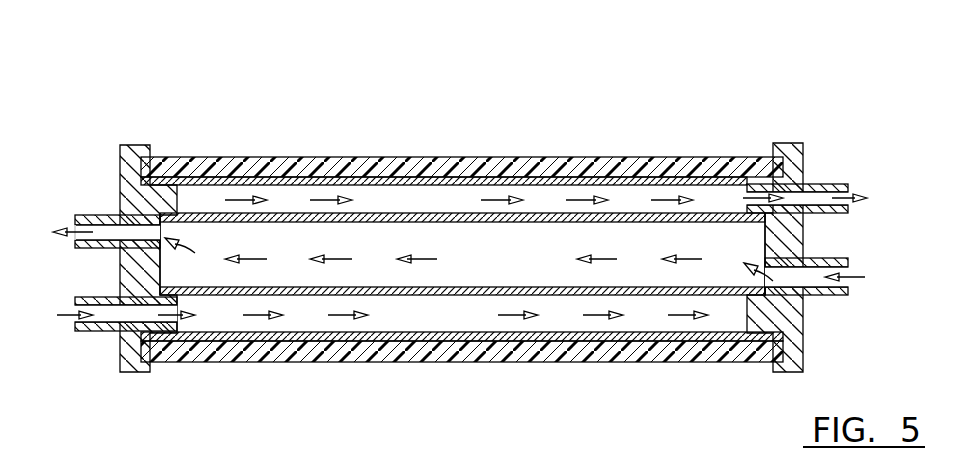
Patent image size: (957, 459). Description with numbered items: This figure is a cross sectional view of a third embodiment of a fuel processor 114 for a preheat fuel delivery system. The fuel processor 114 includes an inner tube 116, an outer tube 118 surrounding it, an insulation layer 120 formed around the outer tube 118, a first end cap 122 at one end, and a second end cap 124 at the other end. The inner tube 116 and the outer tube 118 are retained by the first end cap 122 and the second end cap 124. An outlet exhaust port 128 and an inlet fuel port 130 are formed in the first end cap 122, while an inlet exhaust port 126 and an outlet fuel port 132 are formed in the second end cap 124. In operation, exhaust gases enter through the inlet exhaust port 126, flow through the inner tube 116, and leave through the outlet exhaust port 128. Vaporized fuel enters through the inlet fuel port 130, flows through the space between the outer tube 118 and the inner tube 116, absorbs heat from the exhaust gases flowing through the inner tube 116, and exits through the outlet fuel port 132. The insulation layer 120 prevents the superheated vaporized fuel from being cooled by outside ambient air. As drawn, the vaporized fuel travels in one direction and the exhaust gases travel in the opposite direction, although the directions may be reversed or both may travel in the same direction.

The fuel processor 114 is at (662, 78).
The inner tube 116 is at (535, 295).
The outer tube 118 is at (302, 341).
The insulation layer 120 is at (397, 362).
The first end cap 122 is at (134, 146).
The second end cap 124 is at (787, 143).
The inlet exhaust port 126 is at (835, 295).
The outlet exhaust port 128 is at (92, 215).
The inlet fuel port 130 is at (97, 332).
The outlet fuel port 132 is at (830, 184).